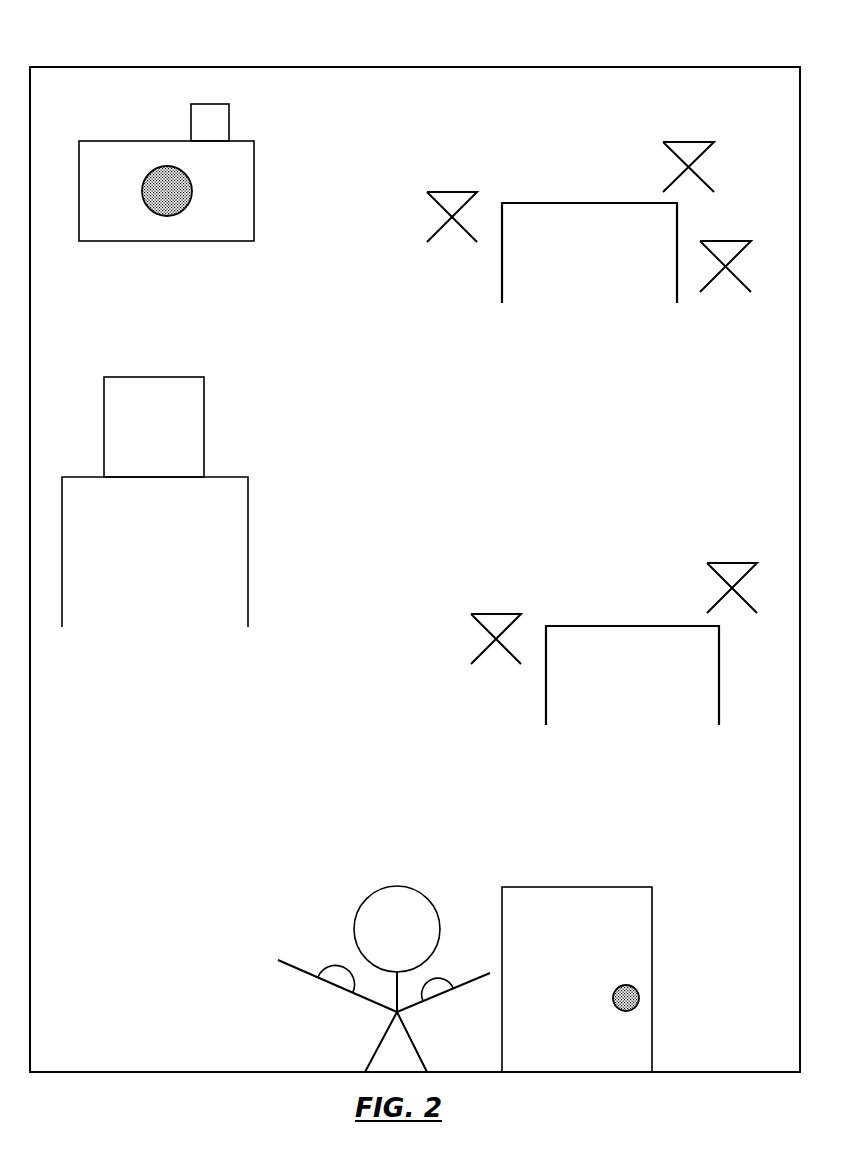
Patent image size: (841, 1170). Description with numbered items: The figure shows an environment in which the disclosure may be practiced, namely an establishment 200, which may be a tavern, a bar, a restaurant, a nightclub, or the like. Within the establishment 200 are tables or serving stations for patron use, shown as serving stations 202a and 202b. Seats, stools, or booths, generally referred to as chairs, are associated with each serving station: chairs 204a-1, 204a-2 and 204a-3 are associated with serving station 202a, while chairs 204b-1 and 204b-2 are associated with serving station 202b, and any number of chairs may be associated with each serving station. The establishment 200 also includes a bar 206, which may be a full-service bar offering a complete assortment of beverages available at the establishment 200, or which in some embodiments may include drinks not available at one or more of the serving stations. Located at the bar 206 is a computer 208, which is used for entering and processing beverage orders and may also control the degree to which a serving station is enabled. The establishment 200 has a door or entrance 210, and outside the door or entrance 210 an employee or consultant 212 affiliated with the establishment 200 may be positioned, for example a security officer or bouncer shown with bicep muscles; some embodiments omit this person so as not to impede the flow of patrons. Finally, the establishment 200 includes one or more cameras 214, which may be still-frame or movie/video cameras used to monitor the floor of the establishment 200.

The establishment 200 is at (378, 65).
The serving station 202a is at (500, 292).
The serving station 202b is at (544, 713).
The chair 204a-1 is at (422, 203).
The chair 204a-2 is at (662, 166).
The chair 204a-3 is at (725, 302).
The chair 204b-1 is at (466, 626).
The chair 204b-2 is at (708, 588).
The bar 206 is at (250, 530).
The computer 208 is at (206, 405).
The door or entrance 210 is at (654, 919).
The employee or consultant 212 is at (355, 1002).
The camera 214 is at (165, 243).